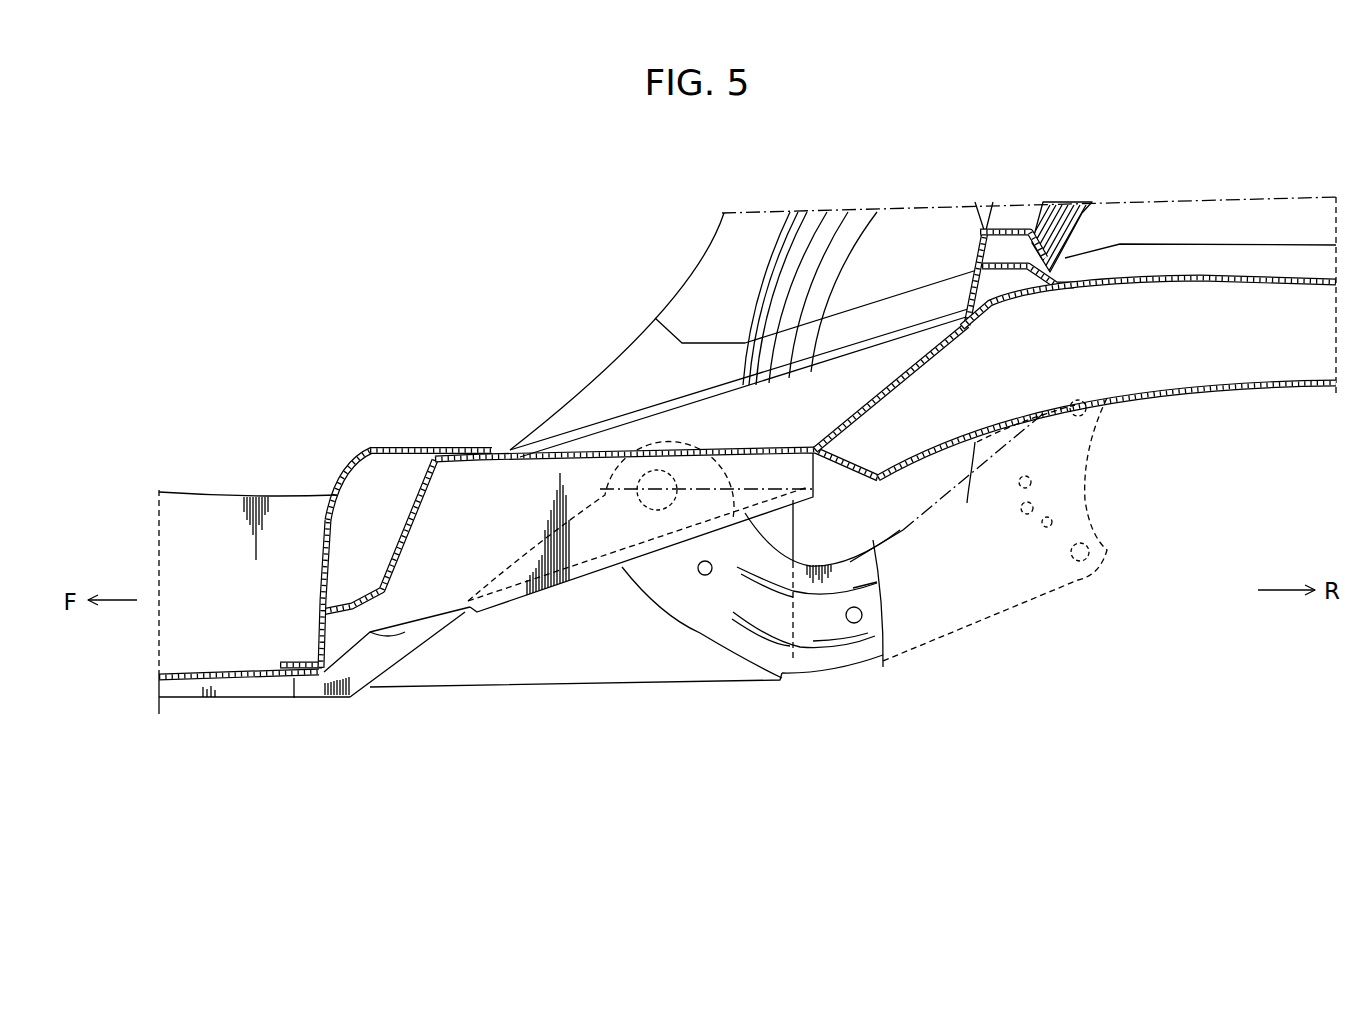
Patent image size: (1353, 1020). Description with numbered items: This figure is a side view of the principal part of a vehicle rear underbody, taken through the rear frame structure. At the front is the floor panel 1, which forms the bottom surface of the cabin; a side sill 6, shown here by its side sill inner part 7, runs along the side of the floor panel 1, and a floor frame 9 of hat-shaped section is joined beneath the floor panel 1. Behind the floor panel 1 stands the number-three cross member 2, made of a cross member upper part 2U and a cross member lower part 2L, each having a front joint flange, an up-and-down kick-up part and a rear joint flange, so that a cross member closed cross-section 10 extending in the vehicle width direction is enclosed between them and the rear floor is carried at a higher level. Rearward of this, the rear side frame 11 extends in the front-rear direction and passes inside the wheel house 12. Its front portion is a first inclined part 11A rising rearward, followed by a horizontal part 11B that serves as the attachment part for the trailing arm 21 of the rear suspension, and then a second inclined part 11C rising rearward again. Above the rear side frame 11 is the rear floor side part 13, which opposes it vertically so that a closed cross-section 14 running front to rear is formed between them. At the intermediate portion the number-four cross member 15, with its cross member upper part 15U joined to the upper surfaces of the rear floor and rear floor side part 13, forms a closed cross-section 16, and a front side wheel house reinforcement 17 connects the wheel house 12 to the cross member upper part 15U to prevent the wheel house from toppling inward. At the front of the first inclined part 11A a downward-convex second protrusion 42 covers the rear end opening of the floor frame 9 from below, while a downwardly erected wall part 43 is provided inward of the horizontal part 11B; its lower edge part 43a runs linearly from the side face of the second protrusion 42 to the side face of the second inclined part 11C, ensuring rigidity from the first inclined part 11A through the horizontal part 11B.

The floor panel 1 is at (204, 672).
The No. 3 cross member 2 is at (380, 518).
The cross member upper part 2U is at (392, 447).
The cross member lower part 2L is at (378, 578).
The side sill 6 is at (206, 494).
The side sill inner part 7 is at (208, 606).
The floor frame 9 is at (193, 698).
The cross member closed cross-section 10 is at (353, 532).
The rear side frame 11 is at (1224, 396).
The first inclined part 11A is at (516, 562).
The horizontal part 11B is at (772, 481).
The second inclined part 11C is at (978, 529).
The wheel house 12 is at (770, 262).
The rear floor side part 13 is at (1270, 280).
The closed cross-section 14 is at (1151, 352).
The No. 4 cross member 15 is at (918, 326).
The cross member upper part 15U is at (986, 288).
The closed cross-section 16 is at (1028, 284).
The front side wheel house reinforcement 17 is at (1009, 271).
The trailing arm 21 is at (846, 672).
The second protrusion 42 is at (334, 698).
The wall part 43 is at (568, 575).
The lower edge part 43a is at (547, 590).